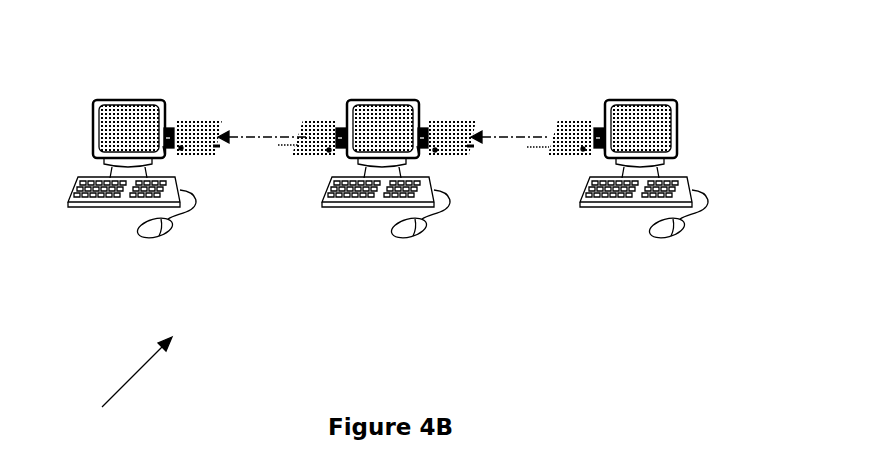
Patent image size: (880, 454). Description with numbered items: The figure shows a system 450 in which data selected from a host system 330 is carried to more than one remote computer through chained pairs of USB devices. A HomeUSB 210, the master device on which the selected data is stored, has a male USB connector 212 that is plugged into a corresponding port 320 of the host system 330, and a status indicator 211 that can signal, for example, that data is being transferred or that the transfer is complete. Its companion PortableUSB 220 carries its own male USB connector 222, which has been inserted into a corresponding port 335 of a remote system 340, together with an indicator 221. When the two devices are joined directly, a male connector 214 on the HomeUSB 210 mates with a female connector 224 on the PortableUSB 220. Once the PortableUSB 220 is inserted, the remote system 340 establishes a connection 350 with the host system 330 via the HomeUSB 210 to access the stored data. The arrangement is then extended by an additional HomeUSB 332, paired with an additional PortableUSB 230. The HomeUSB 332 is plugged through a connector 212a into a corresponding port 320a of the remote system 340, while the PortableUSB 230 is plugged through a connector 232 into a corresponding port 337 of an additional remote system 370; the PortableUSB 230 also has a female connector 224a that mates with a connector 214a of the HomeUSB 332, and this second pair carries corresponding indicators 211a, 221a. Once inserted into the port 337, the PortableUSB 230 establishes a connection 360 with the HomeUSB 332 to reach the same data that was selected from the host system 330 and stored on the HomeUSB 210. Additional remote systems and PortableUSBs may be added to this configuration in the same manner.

The HomeUSB 210 is at (194, 119).
The indicator 211 is at (183, 152).
The male USB connector 212 is at (172, 126).
The male connector 214 is at (216, 149).
The PortableUSB 220 is at (325, 120).
The indicator 221 is at (328, 151).
The male USB connector 222 is at (342, 122).
The female connector 224 is at (297, 147).
The additional PortableUSB 230 is at (572, 118).
The connector 232 is at (597, 128).
The connector 212a is at (423, 127).
The source address field 211a is at (436, 152).
The connector 214a is at (472, 150).
The address field 221a is at (582, 151).
The female connector 224a is at (552, 147).
The port 320 is at (167, 148).
The port 320a is at (415, 150).
The host system 330 is at (131, 97).
The additional HomeUSB 332 is at (447, 122).
The port 335 is at (345, 148).
The port 337 is at (600, 150).
The remote system 340 is at (397, 102).
The connection 350 is at (246, 133).
The connection 360 is at (515, 132).
The additional remote system 370 is at (632, 102).
The system 450 is at (123, 382).